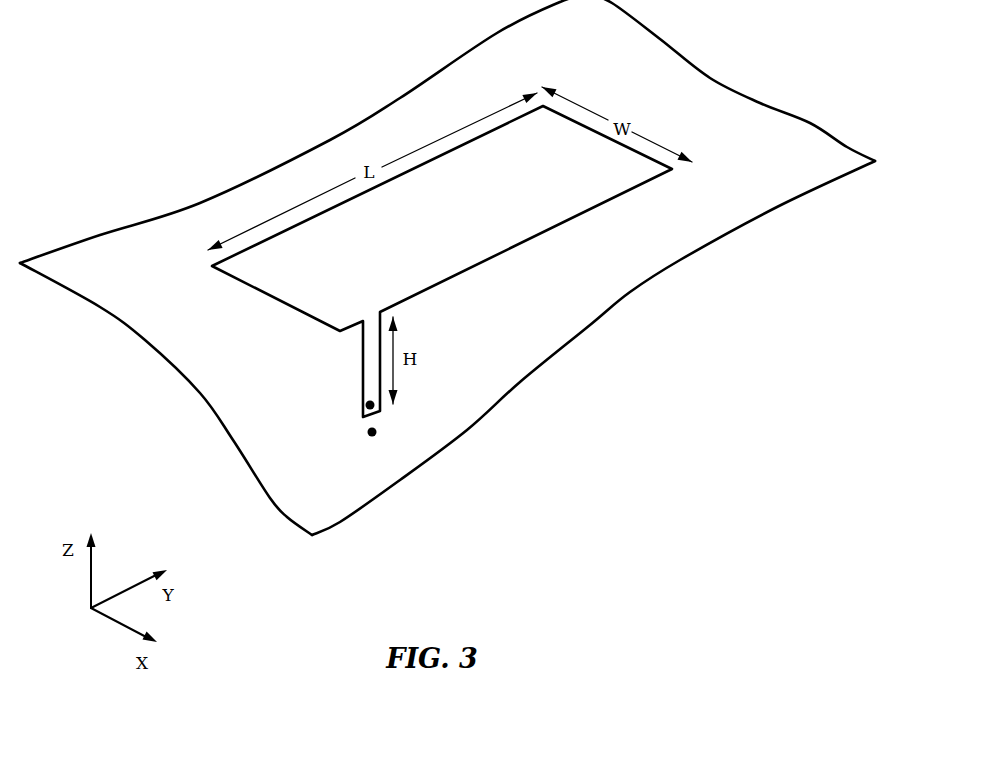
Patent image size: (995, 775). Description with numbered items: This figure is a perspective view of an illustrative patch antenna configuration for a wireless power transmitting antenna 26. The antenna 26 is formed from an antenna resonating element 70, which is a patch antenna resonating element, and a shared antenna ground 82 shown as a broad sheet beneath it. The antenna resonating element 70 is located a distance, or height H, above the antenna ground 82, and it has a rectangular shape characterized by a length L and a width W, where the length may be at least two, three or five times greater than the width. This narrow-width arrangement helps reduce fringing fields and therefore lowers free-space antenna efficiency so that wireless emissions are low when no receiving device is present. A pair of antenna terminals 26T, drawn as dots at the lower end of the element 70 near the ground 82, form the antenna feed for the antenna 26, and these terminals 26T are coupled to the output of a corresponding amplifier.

The wireless power transmitting antenna 26 is at (447, 267).
The antenna terminals 26T is at (366, 406).
The antenna resonating element 70 is at (547, 215).
The antenna ground 82 is at (587, 302).